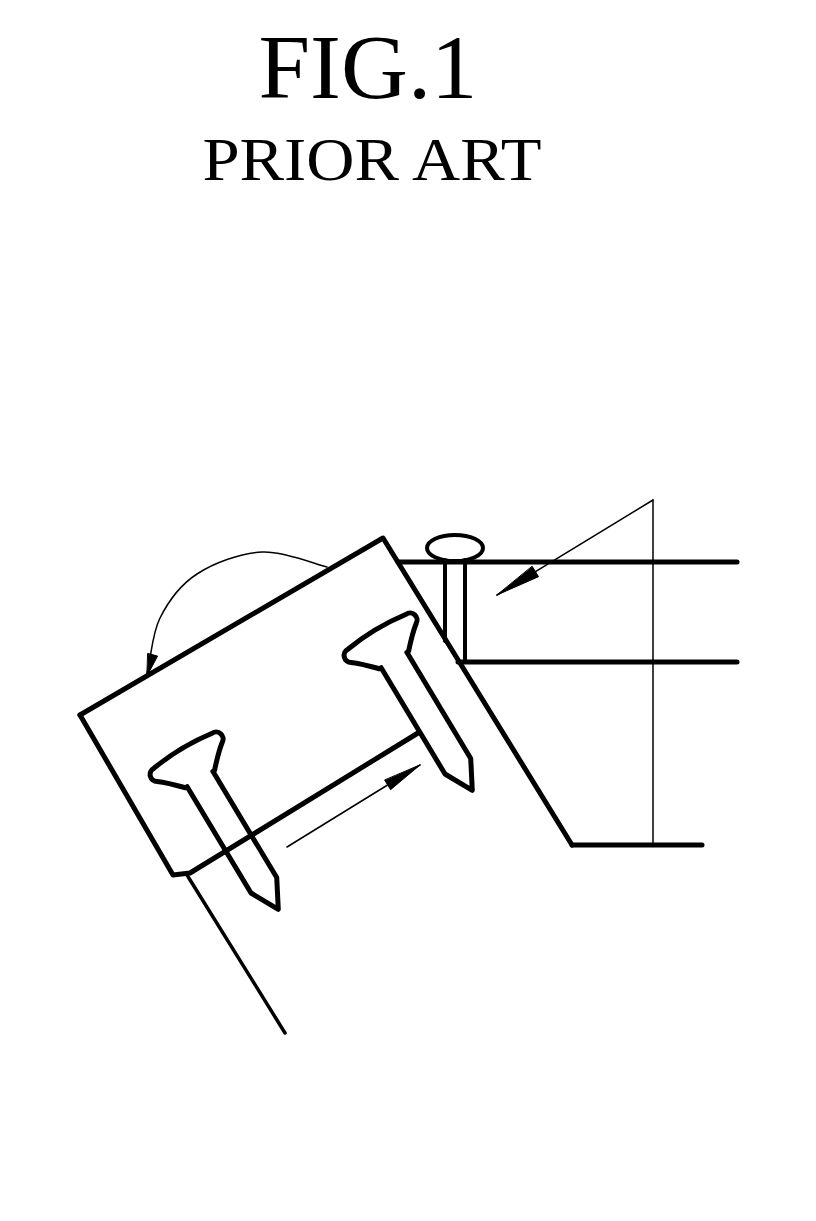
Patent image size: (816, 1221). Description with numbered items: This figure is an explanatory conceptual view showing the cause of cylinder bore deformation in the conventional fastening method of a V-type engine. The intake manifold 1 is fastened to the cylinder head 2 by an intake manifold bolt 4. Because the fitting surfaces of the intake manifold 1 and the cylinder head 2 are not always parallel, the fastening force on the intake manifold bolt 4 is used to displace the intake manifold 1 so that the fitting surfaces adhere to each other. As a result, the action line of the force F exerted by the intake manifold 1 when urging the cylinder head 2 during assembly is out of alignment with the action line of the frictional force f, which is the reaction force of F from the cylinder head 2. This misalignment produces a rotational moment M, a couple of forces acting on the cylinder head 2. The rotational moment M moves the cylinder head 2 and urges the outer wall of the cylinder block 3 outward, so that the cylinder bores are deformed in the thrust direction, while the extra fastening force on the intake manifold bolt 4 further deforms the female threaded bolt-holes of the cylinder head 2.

The intake manifold 1 is at (623, 640).
The cylinder head 2 is at (147, 673).
The cylinder block 3 is at (268, 920).
The intake manifold bolt 4 is at (477, 535).
The force of the intake manifold F is at (595, 656).
The rotational moment M is at (237, 599).
The frictional force f is at (354, 806).